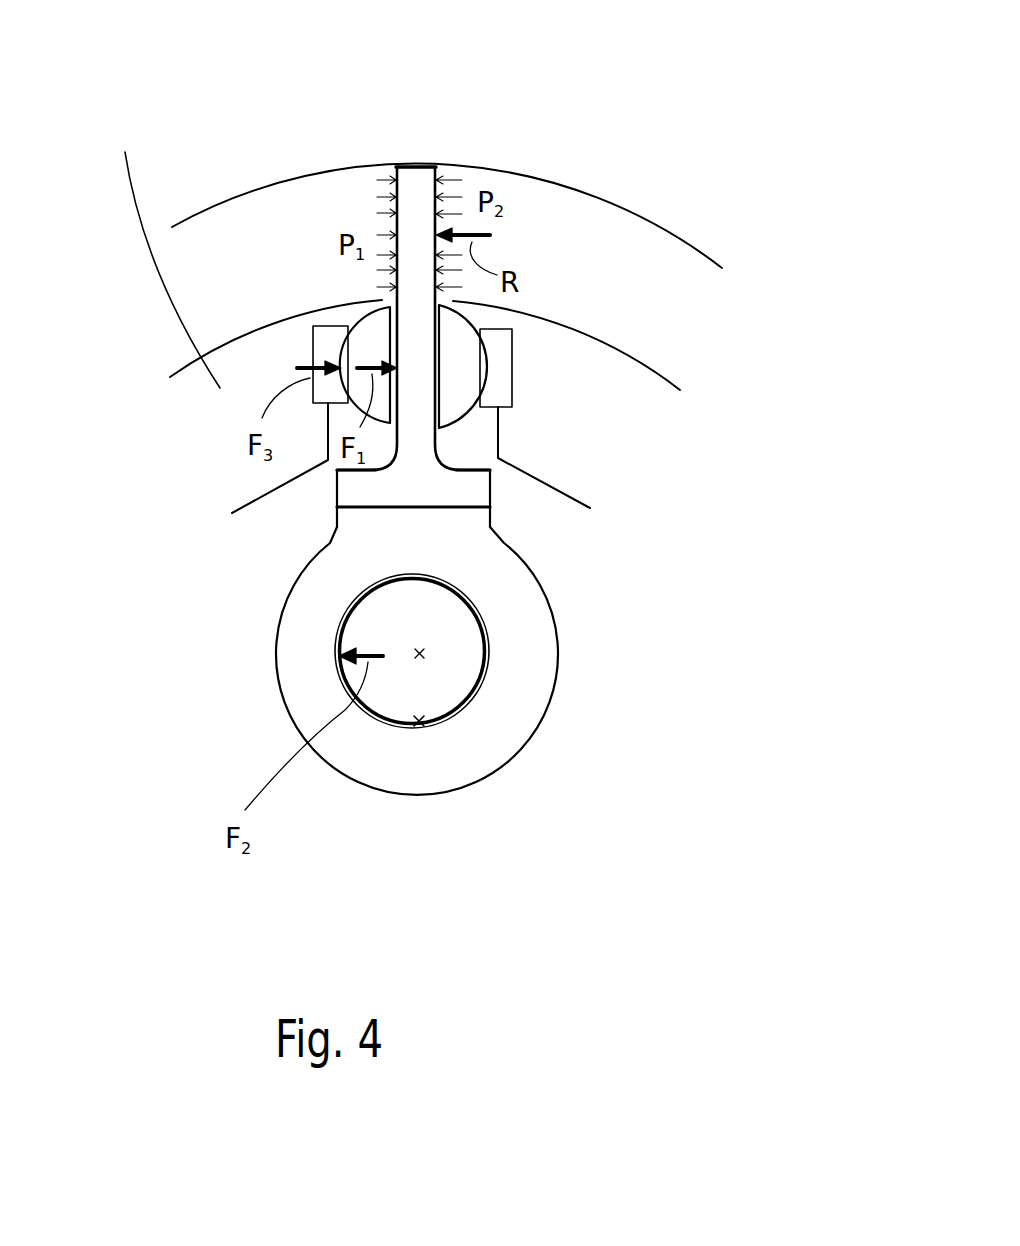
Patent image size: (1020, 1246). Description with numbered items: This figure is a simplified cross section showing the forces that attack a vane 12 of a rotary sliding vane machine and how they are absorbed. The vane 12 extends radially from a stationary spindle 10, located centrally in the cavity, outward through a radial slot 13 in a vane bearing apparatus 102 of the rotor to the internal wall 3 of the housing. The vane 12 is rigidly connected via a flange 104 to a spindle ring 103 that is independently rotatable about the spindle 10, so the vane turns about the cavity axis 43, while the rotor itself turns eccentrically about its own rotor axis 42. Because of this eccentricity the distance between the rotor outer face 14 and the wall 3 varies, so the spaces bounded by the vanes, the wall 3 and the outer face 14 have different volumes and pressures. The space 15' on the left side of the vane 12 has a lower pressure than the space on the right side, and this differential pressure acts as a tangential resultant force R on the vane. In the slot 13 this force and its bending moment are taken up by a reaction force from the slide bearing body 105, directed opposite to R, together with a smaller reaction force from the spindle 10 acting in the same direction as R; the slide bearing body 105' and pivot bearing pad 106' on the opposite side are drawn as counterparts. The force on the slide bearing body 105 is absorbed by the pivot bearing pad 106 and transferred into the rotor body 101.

The internal wall 3 is at (327, 167).
The vane 12 is at (413, 200).
The outer face 14 is at (640, 358).
The rotor body 101 is at (160, 252).
The vane bearing apparatus 102 is at (537, 331).
The slide bearing body 105 is at (318, 348).
The slide bearing body 105' is at (525, 388).
The pivot bearing pad 106 is at (290, 419).
The pivot bearing pad 106' is at (550, 418).
The flange 104 is at (337, 488).
The spindle ring 103 is at (323, 567).
The radial slot 13 is at (437, 427).
The spindle 10 is at (457, 637).
The rotor axis 42 is at (421, 722).
The cavity axis 43 is at (422, 654).
The space 15' is at (281, 246).